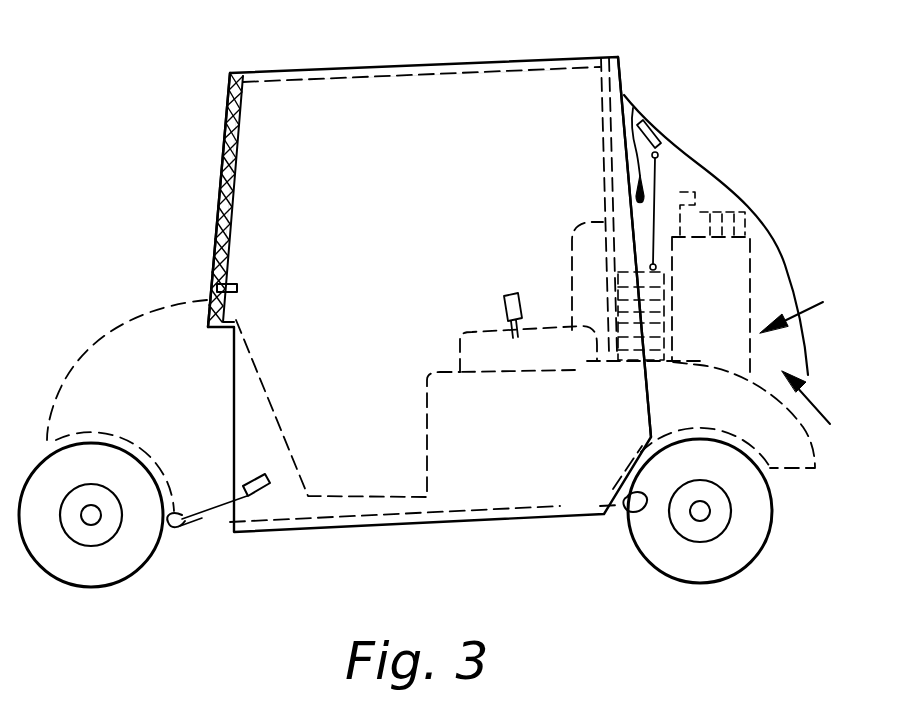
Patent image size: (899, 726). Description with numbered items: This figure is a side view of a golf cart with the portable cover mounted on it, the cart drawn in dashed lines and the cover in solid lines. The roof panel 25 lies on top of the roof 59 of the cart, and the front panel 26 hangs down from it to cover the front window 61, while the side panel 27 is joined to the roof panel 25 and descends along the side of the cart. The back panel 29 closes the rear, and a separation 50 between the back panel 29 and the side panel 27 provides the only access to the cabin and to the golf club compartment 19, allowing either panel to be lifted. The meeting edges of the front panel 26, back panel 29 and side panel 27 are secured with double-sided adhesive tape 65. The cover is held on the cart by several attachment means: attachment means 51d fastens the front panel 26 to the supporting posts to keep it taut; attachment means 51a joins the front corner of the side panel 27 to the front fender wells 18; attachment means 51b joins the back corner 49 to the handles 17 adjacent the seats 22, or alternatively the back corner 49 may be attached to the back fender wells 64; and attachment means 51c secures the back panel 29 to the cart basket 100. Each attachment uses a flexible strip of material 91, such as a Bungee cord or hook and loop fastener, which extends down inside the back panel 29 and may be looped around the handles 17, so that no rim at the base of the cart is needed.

The roof panel 25 is at (430, 66).
The double-sided adhesive tape 65 is at (227, 100).
The roof 59 is at (455, 72).
The front window 61 is at (234, 200).
The front panel 26 is at (214, 254).
The attachment means 51d is at (238, 290).
The side panel 27 is at (358, 348).
The handles 17 is at (465, 339).
The seats 22 is at (427, 400).
The attachment means 51b is at (515, 293).
The cart basket 100 is at (633, 108).
The attachment means 51c is at (660, 134).
The strip of material 91 is at (658, 183).
The back panel 29 is at (780, 253).
The golf club compartment 19 is at (807, 312).
The separation 50 is at (821, 410).
The back corner 49 is at (640, 458).
The back fender wells 64 is at (641, 516).
The attachment means 51a is at (263, 497).
The front fender wells 18 is at (160, 517).